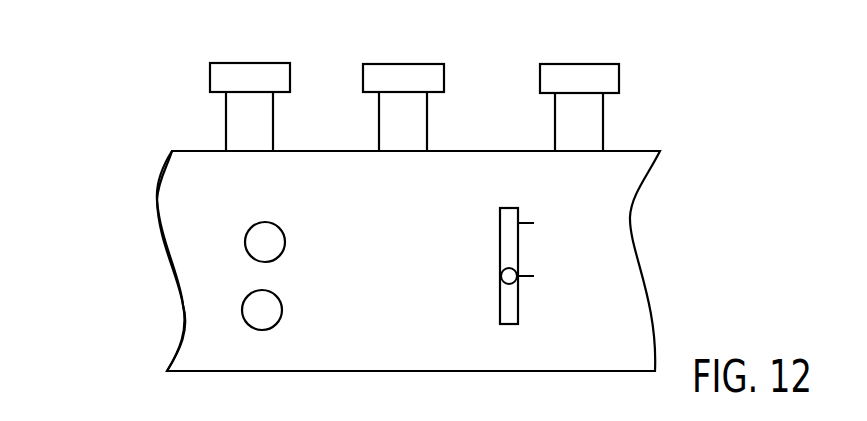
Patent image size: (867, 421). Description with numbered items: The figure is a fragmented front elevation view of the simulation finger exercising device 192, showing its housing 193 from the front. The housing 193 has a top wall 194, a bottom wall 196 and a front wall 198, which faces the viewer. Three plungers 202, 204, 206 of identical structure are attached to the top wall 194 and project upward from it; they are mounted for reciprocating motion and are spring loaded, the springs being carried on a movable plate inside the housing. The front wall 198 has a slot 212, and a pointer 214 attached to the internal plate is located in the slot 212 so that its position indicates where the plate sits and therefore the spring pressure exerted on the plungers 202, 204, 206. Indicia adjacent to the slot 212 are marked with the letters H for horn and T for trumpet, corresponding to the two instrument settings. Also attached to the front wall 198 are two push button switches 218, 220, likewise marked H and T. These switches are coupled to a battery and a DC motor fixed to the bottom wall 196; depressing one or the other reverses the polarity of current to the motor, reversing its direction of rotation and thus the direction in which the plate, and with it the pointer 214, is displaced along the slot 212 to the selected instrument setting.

The simulation finger exercising device 192 is at (130, 220).
The housing 193 is at (175, 312).
The top wall 194 is at (634, 152).
The bottom wall 196 is at (542, 371).
The front wall 198 is at (345, 371).
The plunger 202 is at (235, 122).
The plunger 204 is at (387, 116).
The plunger 206 is at (568, 118).
The slot 212 is at (510, 208).
The pointer 214 is at (502, 278).
The push button switch 218 is at (252, 241).
The push button switch 220 is at (248, 306).